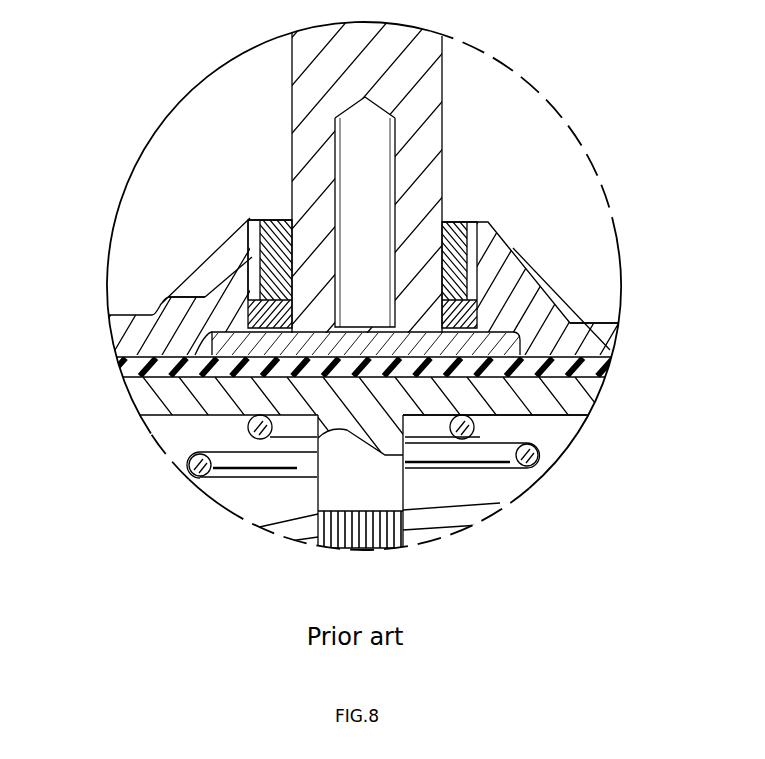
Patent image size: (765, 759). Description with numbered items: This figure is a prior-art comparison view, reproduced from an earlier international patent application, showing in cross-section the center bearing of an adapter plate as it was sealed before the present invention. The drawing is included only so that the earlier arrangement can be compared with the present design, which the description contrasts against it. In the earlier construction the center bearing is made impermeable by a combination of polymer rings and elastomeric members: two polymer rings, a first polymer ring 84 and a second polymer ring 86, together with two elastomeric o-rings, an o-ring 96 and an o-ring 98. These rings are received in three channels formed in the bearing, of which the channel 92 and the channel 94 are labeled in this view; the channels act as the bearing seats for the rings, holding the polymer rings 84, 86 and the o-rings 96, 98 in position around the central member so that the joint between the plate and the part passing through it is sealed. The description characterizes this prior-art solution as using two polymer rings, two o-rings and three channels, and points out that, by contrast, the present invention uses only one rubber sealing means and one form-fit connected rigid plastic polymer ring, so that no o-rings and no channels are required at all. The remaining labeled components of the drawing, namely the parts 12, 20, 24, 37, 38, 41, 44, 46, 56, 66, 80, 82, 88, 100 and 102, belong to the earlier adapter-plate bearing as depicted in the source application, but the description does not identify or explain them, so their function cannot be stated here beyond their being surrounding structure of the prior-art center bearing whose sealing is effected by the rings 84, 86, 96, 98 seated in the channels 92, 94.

The threaded stem 12 is at (398, 548).
The nut housing 20 is at (527, 250).
The plate 24 is at (135, 370).
The seal ring 37 is at (462, 222).
The seal pack 38 is at (266, 212).
The lower body section 41 is at (545, 403).
The body flange 44 is at (145, 418).
The retaining bar with O-ring 46 is at (540, 468).
The bolt body 56 is at (442, 147).
The housing sloped surface 66 is at (207, 416).
The sloped face 80 is at (480, 262).
The seal element 82 is at (447, 222).
The polymer ring 84 is at (472, 228).
The polymer ring 86 is at (500, 322).
The housing step 88 is at (246, 290).
The channel 92 is at (248, 262).
The channel 94 is at (255, 300).
The o-ring 96 is at (278, 218).
The o-ring 98 is at (538, 238).
The O-ring groove 100 is at (484, 385).
The inner seal ring 102 is at (458, 218).